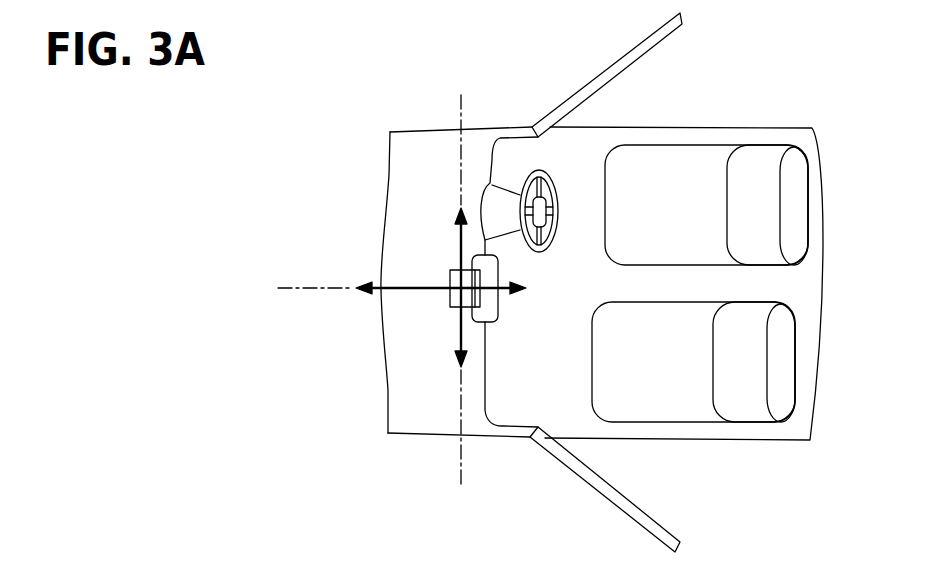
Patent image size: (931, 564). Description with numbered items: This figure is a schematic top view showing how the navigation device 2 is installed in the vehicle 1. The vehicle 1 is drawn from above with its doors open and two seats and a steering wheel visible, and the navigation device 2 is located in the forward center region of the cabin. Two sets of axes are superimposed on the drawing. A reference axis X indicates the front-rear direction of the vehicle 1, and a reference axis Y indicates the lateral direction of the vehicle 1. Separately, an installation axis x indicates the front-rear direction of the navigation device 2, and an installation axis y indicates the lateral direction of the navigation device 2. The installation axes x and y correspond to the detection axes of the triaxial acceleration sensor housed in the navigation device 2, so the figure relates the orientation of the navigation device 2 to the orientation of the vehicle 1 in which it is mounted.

The vehicle 1 is at (732, 117).
The navigation device 2 is at (450, 273).
The reference axis X is at (324, 288).
The reference axis Y is at (458, 413).
The installation axis x is at (428, 292).
The installation axis y is at (456, 333).